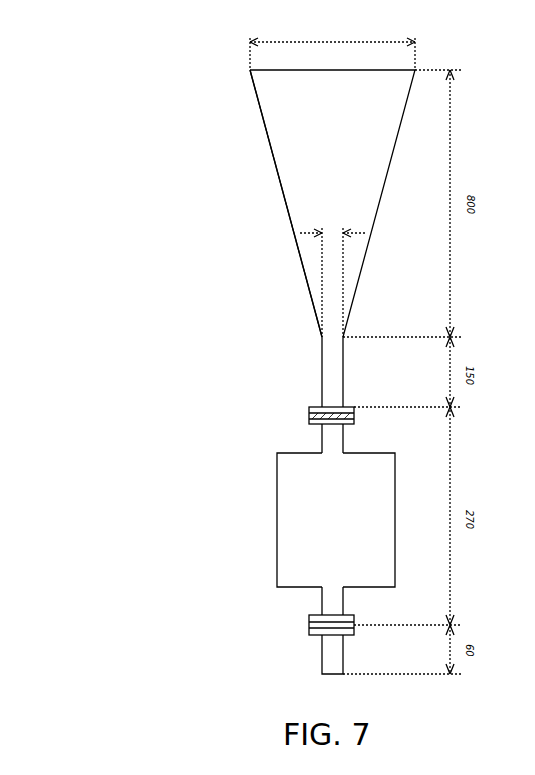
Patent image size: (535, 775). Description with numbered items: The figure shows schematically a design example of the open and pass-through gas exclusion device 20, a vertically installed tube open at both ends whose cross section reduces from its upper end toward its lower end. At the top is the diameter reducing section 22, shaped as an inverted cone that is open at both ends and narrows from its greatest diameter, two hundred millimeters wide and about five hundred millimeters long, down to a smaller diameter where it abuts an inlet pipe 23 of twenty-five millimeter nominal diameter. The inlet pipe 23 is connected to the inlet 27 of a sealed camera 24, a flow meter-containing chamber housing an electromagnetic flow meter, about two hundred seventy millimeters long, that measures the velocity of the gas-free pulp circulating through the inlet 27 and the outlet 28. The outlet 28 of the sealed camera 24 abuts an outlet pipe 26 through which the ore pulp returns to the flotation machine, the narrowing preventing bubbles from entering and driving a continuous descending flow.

The gas exclusion device 20 is at (203, 227).
The diameter reducing section 22 is at (298, 158).
The inlet pipe 23 is at (332, 374).
The inlet 27 is at (318, 412).
The sealed camera 24 is at (325, 518).
The outlet 28 is at (312, 625).
The outlet pipe 26 is at (330, 655).